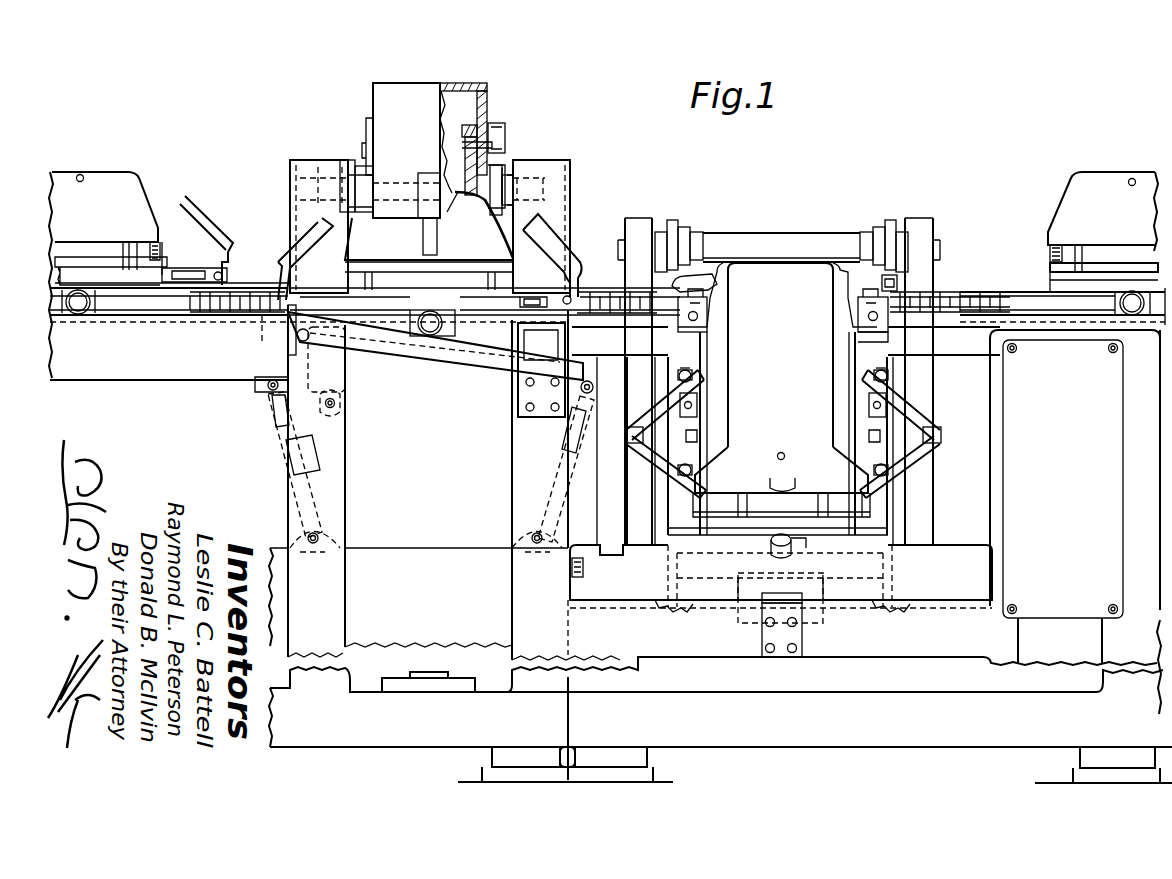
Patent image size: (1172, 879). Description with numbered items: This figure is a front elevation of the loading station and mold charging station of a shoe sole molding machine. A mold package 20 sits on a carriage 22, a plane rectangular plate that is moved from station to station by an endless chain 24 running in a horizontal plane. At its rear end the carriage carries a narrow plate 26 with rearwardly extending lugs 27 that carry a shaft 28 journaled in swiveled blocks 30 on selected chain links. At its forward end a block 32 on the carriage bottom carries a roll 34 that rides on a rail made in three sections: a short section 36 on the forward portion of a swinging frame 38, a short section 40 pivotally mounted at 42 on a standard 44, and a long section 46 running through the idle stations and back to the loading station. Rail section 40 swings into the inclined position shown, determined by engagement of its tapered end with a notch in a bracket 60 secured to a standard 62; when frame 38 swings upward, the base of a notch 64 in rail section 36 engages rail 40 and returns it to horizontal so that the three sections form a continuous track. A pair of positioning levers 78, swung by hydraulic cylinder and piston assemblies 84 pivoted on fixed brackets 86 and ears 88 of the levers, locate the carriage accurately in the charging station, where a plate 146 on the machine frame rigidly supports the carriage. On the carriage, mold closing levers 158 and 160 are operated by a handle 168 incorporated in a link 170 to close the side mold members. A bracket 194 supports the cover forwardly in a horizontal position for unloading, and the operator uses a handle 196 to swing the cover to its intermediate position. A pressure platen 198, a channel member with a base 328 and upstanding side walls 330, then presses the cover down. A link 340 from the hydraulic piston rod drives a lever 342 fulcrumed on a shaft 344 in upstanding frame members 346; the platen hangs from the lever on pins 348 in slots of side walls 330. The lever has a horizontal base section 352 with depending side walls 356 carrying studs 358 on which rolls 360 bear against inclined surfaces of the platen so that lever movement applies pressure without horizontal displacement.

The mold package 20 is at (519, 226).
The carriage 22 is at (452, 312).
The endless chain 24 is at (962, 284).
The narrow plate 26 is at (855, 320).
The lugs 27 is at (688, 322).
The shaft 28 is at (882, 292).
The blocks 30 is at (712, 304).
The block 32 is at (797, 548).
The roll 34 is at (776, 550).
The short rail section 36 is at (918, 548).
The swinging frame 38 is at (905, 492).
The short rail section 40 is at (476, 368).
The pivot 42 is at (290, 336).
The standard 44 is at (335, 452).
The long rail section 46 is at (142, 380).
The bracket 60 is at (533, 417).
The standard 62 is at (523, 474).
The notch 64 is at (586, 570).
The positioning levers 78 is at (325, 412).
The cylinder and piston assemblies 84 is at (280, 430).
The fixed brackets 86 is at (328, 536).
The ears 88 is at (268, 390).
The plate 146 is at (390, 325).
The lever 158 is at (920, 388).
The lever 160 is at (922, 456).
The handle 168 is at (930, 422).
The link 170 is at (935, 492).
The bracket 194 is at (800, 605).
The handle 196 is at (692, 280).
The pressure platen 198 is at (511, 161).
The base 328 is at (470, 198).
The side walls 330 is at (462, 158).
The link 340 is at (423, 237).
The lever 342 is at (362, 108).
The shaft 344 is at (560, 168).
The upstanding members 346 is at (295, 178).
The pins 348 is at (461, 142).
The horizontal base section 352 is at (465, 83).
The side walls 356 is at (480, 128).
The studs 358 is at (506, 130).
The rolls 360 is at (488, 95).